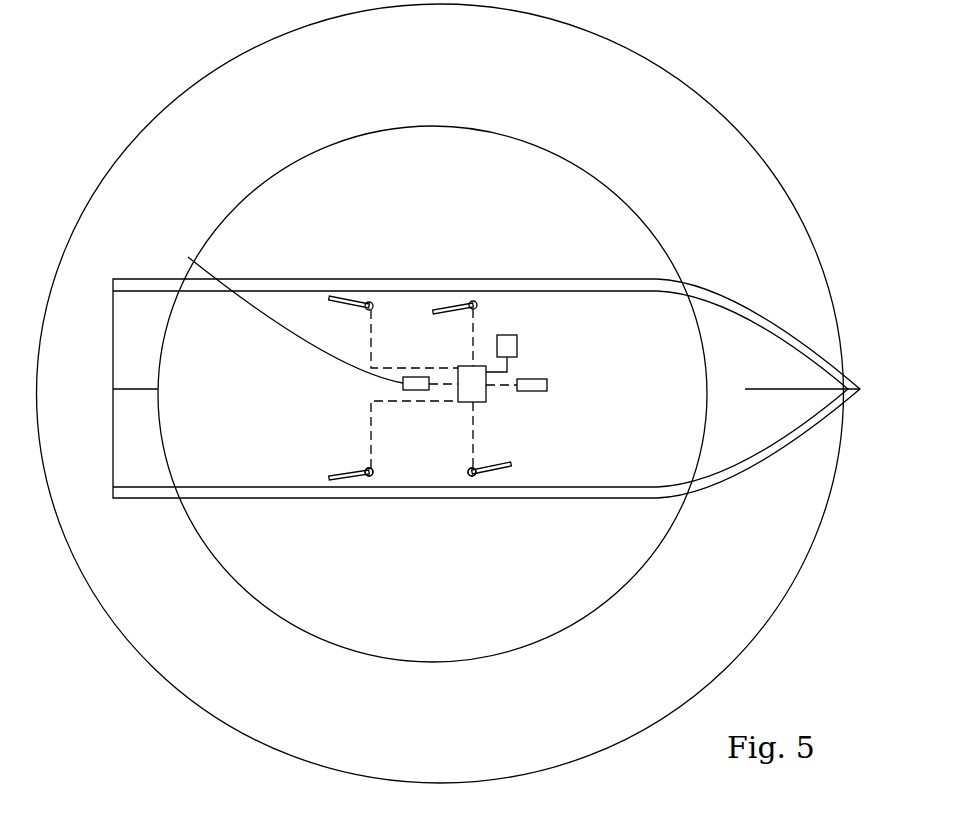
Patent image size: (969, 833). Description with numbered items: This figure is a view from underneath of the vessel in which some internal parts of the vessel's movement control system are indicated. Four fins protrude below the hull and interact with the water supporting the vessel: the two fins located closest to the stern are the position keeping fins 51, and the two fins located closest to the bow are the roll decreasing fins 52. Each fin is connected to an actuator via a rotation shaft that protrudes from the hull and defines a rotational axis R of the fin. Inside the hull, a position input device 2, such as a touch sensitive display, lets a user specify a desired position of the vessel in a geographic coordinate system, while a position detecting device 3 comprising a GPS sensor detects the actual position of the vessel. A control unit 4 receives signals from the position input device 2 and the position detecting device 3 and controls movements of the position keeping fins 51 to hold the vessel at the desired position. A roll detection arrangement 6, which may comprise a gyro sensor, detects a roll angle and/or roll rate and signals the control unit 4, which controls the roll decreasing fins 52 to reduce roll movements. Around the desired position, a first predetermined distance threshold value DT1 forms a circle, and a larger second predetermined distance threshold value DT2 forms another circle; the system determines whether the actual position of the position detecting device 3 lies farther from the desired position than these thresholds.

The position input device 2 is at (512, 335).
The position detecting device 3 is at (318, 315).
The control unit 4 is at (486, 393).
The roll detection arrangement 6 is at (540, 379).
The position keeping fins 51 is at (356, 298).
The roll decreasing fins 52 is at (458, 309).
The rotational axis R is at (372, 478).
The first predetermined distance threshold value DT1 is at (570, 160).
The second predetermined distance threshold value DT2 is at (667, 72).